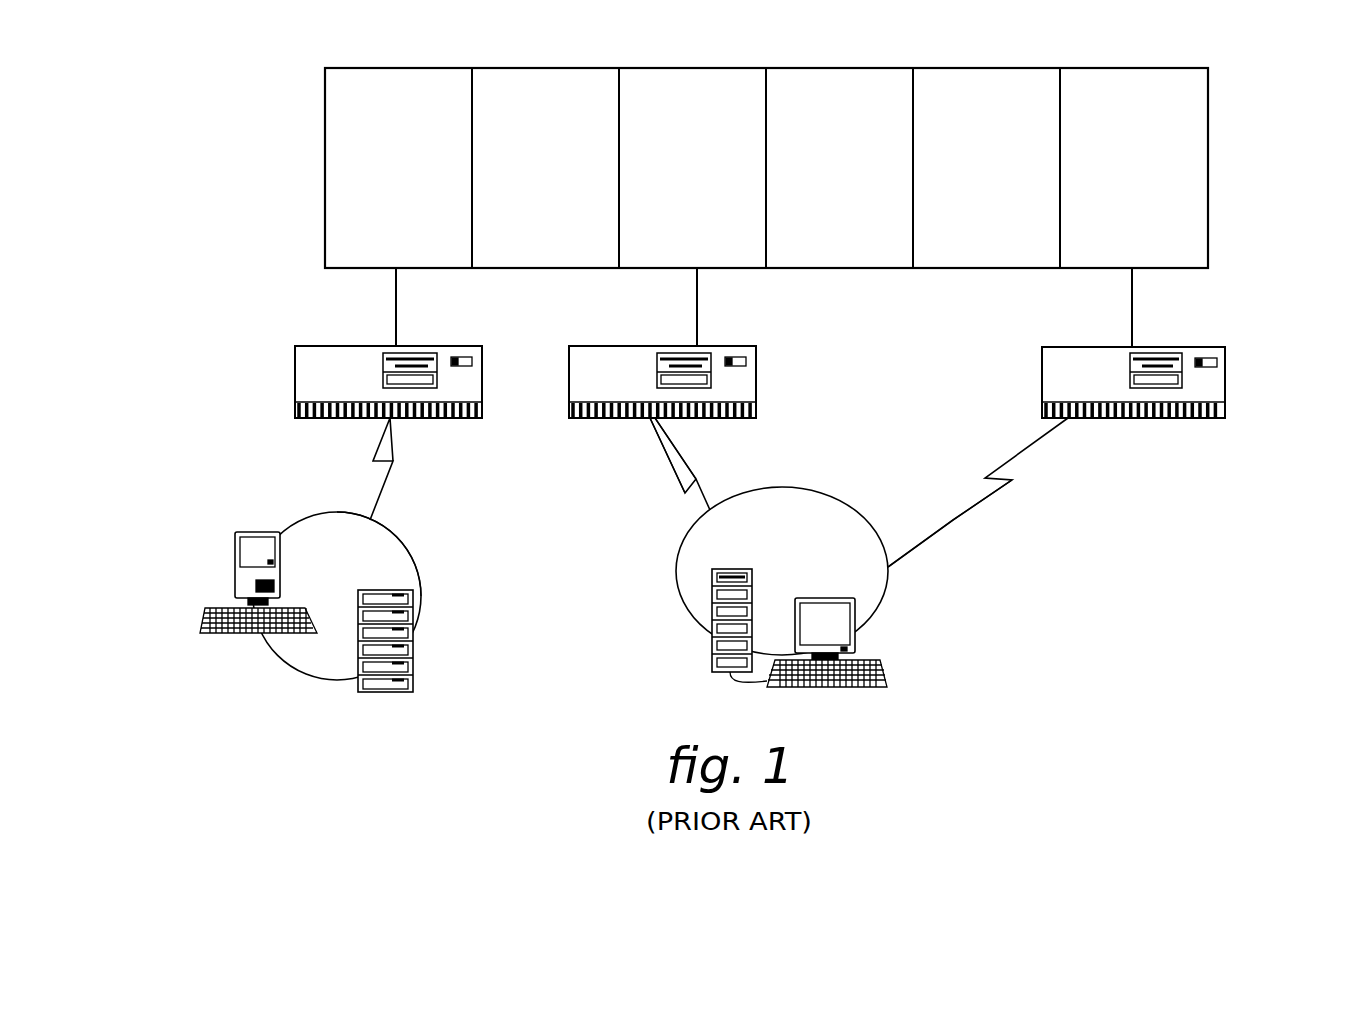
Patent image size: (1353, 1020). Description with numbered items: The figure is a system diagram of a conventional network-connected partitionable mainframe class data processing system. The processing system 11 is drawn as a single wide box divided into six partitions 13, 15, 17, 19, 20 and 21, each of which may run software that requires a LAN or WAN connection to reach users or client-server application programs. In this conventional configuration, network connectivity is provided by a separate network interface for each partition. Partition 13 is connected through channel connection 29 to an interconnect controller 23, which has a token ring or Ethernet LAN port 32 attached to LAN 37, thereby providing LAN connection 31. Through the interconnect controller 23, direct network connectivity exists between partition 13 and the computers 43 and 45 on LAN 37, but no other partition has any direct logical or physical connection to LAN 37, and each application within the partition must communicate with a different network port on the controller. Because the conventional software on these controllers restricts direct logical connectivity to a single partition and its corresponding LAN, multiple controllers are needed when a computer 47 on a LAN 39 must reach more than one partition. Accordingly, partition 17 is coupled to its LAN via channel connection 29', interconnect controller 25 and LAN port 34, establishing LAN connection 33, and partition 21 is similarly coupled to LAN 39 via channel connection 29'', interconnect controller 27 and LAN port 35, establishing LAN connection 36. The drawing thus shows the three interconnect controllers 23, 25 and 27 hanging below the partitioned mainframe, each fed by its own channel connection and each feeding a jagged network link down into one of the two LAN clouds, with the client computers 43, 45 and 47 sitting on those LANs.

The processing system 11 is at (1208, 160).
The partition 13 is at (381, 181).
The partition 15 is at (523, 181).
The partition 17 is at (661, 181).
The partition 19 is at (825, 181).
The partition 20 is at (968, 181).
The partition 21 is at (1113, 181).
The IBM 3172 Interconnect Controller 23 is at (295, 378).
The IBM 3172 Interconnect Controller 25 is at (757, 372).
The IBM 3172 Interconnect Controller 27 is at (1227, 375).
The channel connection 29 is at (306, 307).
The channel connection 29' is at (776, 307).
The channel connection 29'' is at (1186, 307).
The LAN connection 31 is at (375, 508).
The LAN port 32 is at (395, 420).
The LAN connection 33 is at (668, 466).
The LAN port 34 is at (657, 423).
The LAN port 35 is at (1072, 420).
The LAN connection 36 is at (958, 523).
The LAN 37 is at (408, 563).
The LAN 39 is at (865, 493).
The computer 43 is at (237, 540).
The computer 45 is at (413, 670).
The computer 47 is at (862, 646).